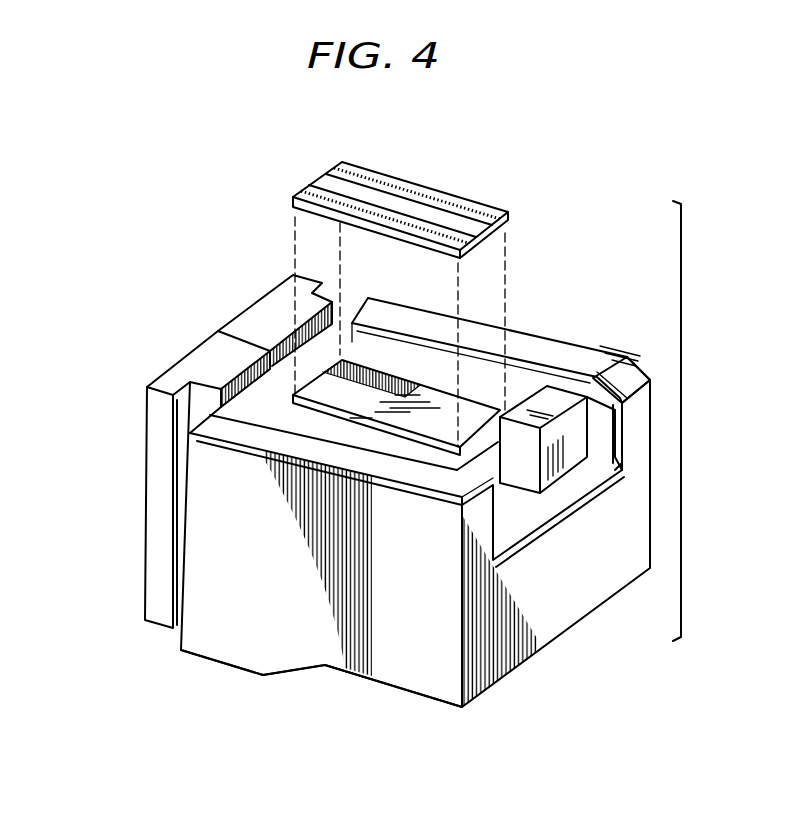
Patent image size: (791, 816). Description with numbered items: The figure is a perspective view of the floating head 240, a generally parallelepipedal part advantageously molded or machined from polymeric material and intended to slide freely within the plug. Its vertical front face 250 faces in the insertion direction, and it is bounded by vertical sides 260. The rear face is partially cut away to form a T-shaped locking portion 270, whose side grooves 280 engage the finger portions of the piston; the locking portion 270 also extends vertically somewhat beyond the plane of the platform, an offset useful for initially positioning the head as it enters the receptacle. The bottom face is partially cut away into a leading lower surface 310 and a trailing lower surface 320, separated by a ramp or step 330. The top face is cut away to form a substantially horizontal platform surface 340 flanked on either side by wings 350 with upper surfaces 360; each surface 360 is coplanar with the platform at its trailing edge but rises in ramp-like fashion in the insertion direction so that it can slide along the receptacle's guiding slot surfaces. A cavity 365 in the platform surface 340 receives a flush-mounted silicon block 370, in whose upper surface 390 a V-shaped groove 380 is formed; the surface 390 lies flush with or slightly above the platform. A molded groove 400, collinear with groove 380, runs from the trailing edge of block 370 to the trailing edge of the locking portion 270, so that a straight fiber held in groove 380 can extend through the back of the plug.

The floating head 240 is at (161, 200).
The front face 250 is at (565, 612).
The vertical sides 260 is at (385, 667).
The T-shaped locking portion 270 is at (197, 370).
The side grooves 280 is at (323, 300).
The leading lower surface 310 is at (415, 692).
The trailing lower surface 320 is at (218, 663).
The ramp or step 330 is at (297, 676).
The platform surface 340 is at (530, 387).
The wings 350 is at (560, 381).
The upper surfaces of wings 360 is at (590, 357).
The cavity 365 is at (413, 413).
The silicon block 370 is at (312, 212).
The groove 380 is at (400, 203).
The upper surface of silicon block 390 is at (462, 205).
The groove 400 is at (285, 333).